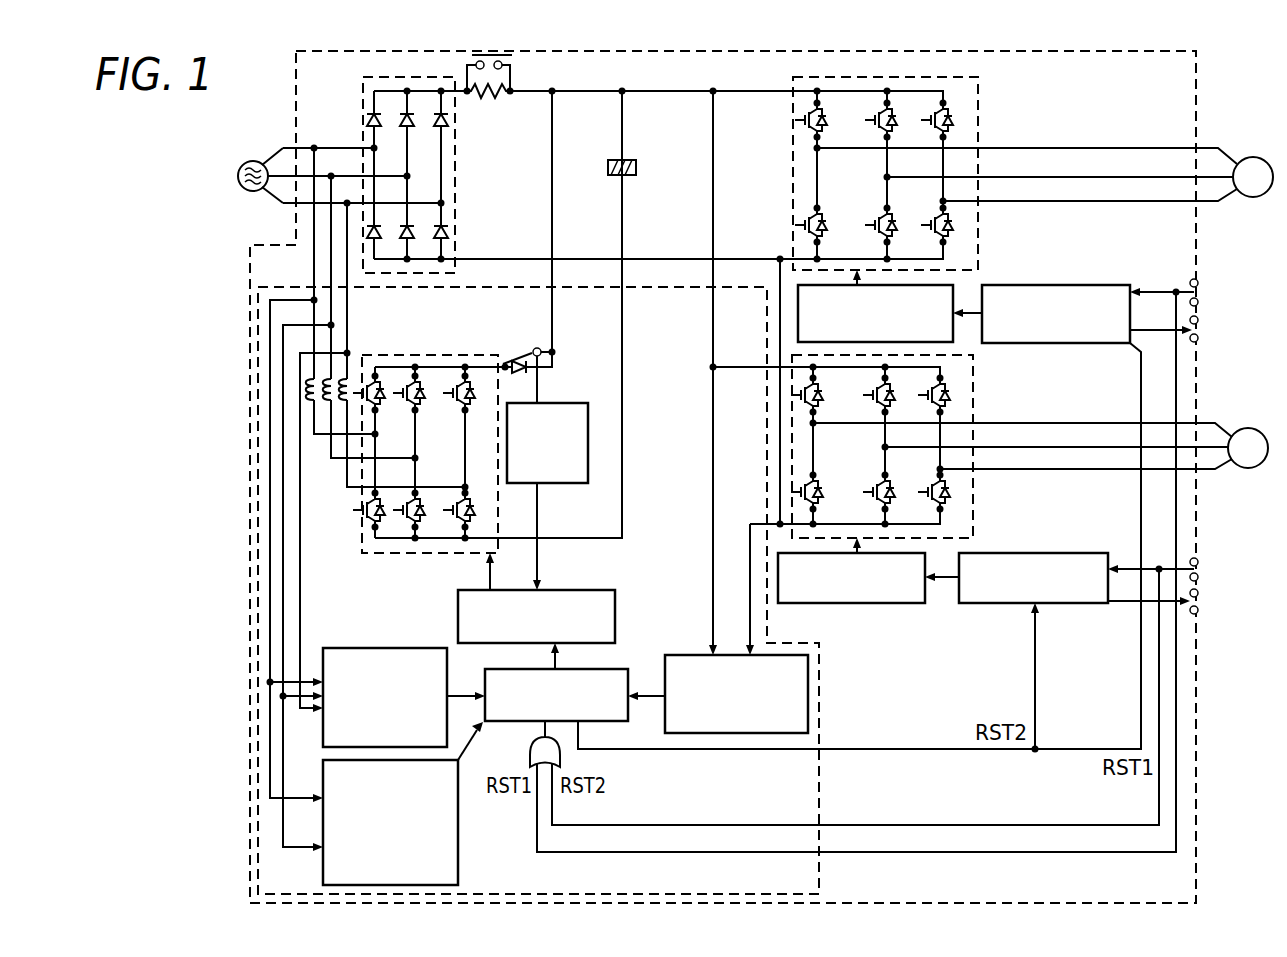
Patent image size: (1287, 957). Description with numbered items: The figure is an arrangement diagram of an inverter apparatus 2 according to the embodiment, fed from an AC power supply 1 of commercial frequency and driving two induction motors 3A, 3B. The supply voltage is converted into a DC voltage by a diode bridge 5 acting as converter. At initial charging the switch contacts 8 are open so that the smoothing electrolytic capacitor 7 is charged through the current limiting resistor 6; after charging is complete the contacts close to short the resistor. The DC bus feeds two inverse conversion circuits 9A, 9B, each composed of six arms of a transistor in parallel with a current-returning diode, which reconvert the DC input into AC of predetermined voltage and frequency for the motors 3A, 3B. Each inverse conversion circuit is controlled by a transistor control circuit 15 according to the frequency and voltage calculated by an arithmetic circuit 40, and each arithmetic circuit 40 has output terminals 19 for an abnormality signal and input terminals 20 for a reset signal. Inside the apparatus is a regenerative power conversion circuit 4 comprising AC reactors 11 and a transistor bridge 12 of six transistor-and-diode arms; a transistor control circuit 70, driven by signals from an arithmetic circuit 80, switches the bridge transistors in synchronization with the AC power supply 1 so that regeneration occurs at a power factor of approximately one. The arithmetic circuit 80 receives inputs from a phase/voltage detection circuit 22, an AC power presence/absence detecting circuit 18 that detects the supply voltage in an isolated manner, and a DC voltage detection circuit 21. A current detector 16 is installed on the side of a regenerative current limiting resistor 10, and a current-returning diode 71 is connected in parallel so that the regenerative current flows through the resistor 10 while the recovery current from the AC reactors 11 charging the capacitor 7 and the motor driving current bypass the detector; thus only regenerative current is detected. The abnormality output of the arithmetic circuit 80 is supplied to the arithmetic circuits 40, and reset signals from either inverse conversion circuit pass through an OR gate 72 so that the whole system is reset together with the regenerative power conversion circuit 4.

The AC power supply 1 is at (256, 160).
The inverter apparatus 2 is at (1196, 73).
The induction motor 3A is at (1253, 157).
The induction motor 3B is at (1250, 428).
The regenerative power conversion circuit 4 is at (819, 803).
The diode bridge 5 is at (363, 88).
The current limiting resistor 6 is at (489, 98).
The smoothing electrolytic capacitor 7 is at (606, 167).
The switch contacts 8 is at (512, 55).
The inverse conversion circuit 9A is at (978, 104).
The inverse conversion circuit 9B is at (974, 509).
The regenerative current limiting resistor 10 is at (514, 349).
The AC reactors 11 is at (350, 379).
The transistor bridge 12 is at (425, 355).
The transistor control circuit 15 is at (798, 300).
The current detector 16 is at (540, 348).
The AC power presence/absence detecting circuit 18 is at (458, 855).
The output terminals 19 is at (1168, 466).
The input terminals 20 is at (1168, 429).
The DC voltage detection circuit 21 is at (683, 655).
The phase/voltage detection circuit 22 is at (340, 648).
The arithmetic circuit 40 is at (1105, 285).
The transistor control circuit 70 is at (577, 590).
The current-returning diode 71 is at (520, 374).
The OR gate 72 is at (530, 750).
The arithmetic circuit 80 is at (625, 668).